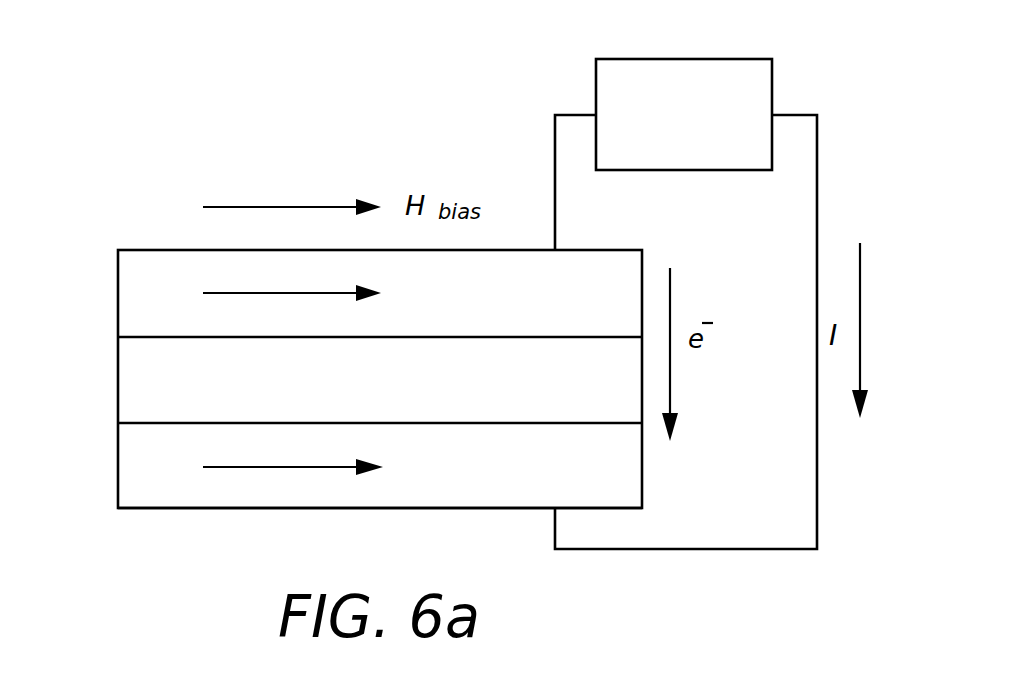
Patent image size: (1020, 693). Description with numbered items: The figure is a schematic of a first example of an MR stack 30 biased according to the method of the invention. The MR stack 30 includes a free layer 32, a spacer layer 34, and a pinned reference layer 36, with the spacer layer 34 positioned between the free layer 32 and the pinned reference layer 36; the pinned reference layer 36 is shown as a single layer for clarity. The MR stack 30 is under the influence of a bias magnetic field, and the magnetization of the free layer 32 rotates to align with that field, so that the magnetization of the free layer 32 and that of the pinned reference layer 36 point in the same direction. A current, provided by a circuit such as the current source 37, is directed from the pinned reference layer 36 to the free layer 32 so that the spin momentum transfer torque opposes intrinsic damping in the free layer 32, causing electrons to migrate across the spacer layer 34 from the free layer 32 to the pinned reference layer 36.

The MR stack 30 is at (138, 160).
The free layer 32 is at (157, 272).
The spacer layer 34 is at (137, 379).
The pinned reference layer 36 is at (131, 448).
The current source 37 is at (596, 87).